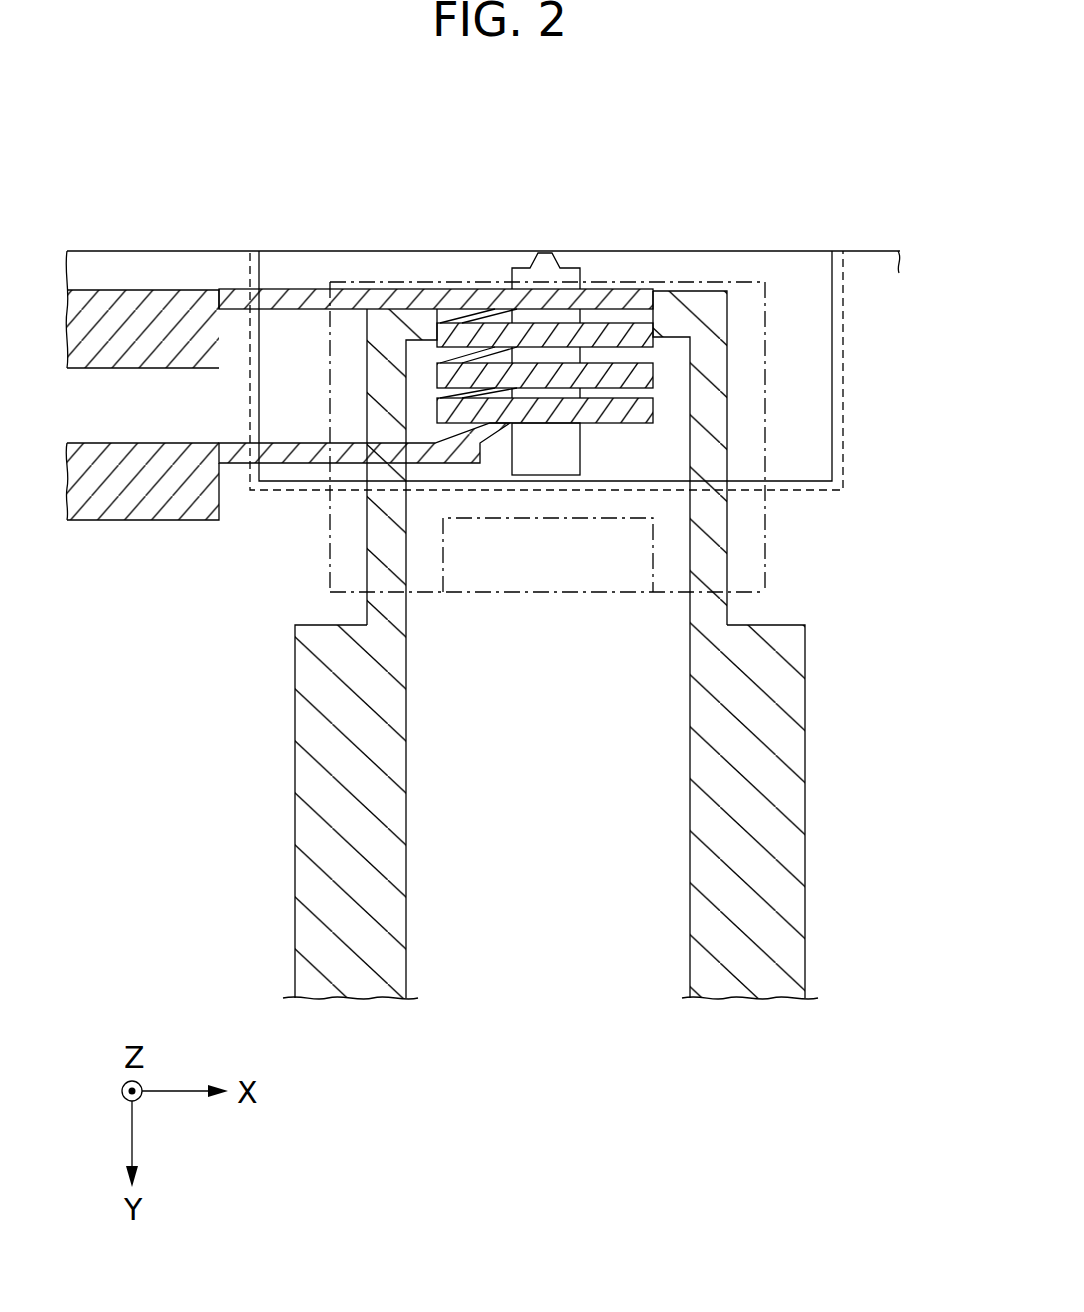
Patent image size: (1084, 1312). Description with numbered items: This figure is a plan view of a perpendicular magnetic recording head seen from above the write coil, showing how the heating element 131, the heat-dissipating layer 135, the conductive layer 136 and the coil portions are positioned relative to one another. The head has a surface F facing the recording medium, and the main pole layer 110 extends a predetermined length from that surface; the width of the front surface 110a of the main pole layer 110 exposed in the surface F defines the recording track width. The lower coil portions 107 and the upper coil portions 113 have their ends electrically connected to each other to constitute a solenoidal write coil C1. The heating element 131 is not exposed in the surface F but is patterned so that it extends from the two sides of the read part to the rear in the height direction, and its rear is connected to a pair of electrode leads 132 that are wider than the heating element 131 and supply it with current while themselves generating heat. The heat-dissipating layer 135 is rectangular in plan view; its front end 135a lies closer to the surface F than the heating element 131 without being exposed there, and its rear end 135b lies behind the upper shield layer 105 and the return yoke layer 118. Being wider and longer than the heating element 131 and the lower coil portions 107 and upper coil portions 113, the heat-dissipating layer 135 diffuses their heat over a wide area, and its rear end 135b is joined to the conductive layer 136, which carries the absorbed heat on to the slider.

The surface facing the recording medium F is at (133, 251).
The upper shield layer 105 is at (848, 305).
The lower coil portions 107 is at (436, 305).
The upper coil portions 113 is at (437, 375).
The main pole layer 110 is at (519, 277).
The front surface of the main pole layer 110a is at (543, 253).
The return yoke layer 118 is at (795, 277).
The heating element 131 is at (700, 328).
The electrode leads 132 is at (763, 818).
The heat-dissipating layer 135 is at (768, 523).
The front end of the heat-dissipating layer 135a is at (680, 282).
The rear end of the heat-dissipating layer 135b is at (633, 592).
The conductive layer 136 is at (513, 558).
The solenoidal write coil C1 is at (423, 302).